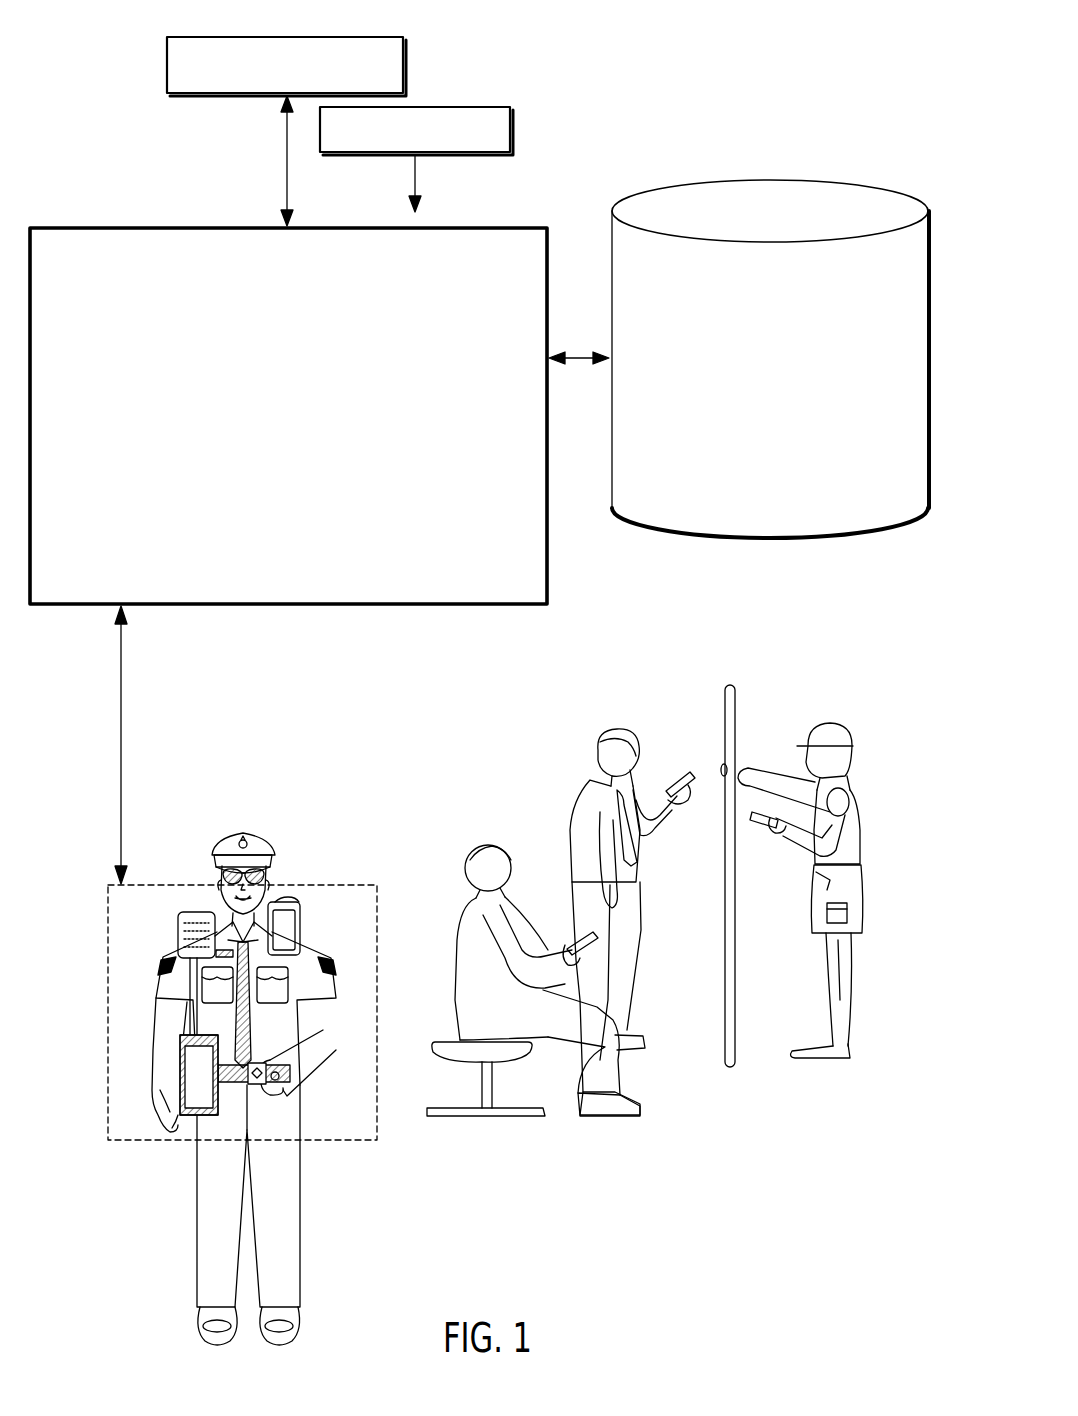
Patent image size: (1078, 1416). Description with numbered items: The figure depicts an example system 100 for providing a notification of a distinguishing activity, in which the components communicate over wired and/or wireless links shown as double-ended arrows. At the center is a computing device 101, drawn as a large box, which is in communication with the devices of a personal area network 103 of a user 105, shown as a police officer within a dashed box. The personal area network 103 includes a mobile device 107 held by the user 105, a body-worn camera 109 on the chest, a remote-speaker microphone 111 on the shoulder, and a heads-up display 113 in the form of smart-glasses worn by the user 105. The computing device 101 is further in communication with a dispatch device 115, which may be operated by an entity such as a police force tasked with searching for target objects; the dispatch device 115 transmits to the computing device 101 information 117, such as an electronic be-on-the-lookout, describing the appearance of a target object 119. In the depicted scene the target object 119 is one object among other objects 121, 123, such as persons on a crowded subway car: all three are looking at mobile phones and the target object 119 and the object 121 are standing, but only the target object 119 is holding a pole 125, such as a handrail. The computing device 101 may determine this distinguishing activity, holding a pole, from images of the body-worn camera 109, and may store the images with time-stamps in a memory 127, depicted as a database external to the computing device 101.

The system 100 is at (750, 42).
The computing device 101 is at (152, 227).
The personal area network 103 is at (108, 1014).
The user 105 is at (273, 852).
The mobile device 107 is at (178, 1090).
The body-worn camera 109 is at (301, 911).
The remote-speaker microphone 111 is at (178, 916).
The heads-up display 113 is at (223, 877).
The dispatch device 115 is at (167, 68).
The information 117 is at (513, 132).
The target object 119 is at (845, 728).
The object 121 is at (598, 752).
The object 123 is at (469, 860).
The pole 125 is at (725, 711).
The memory 127 is at (776, 203).